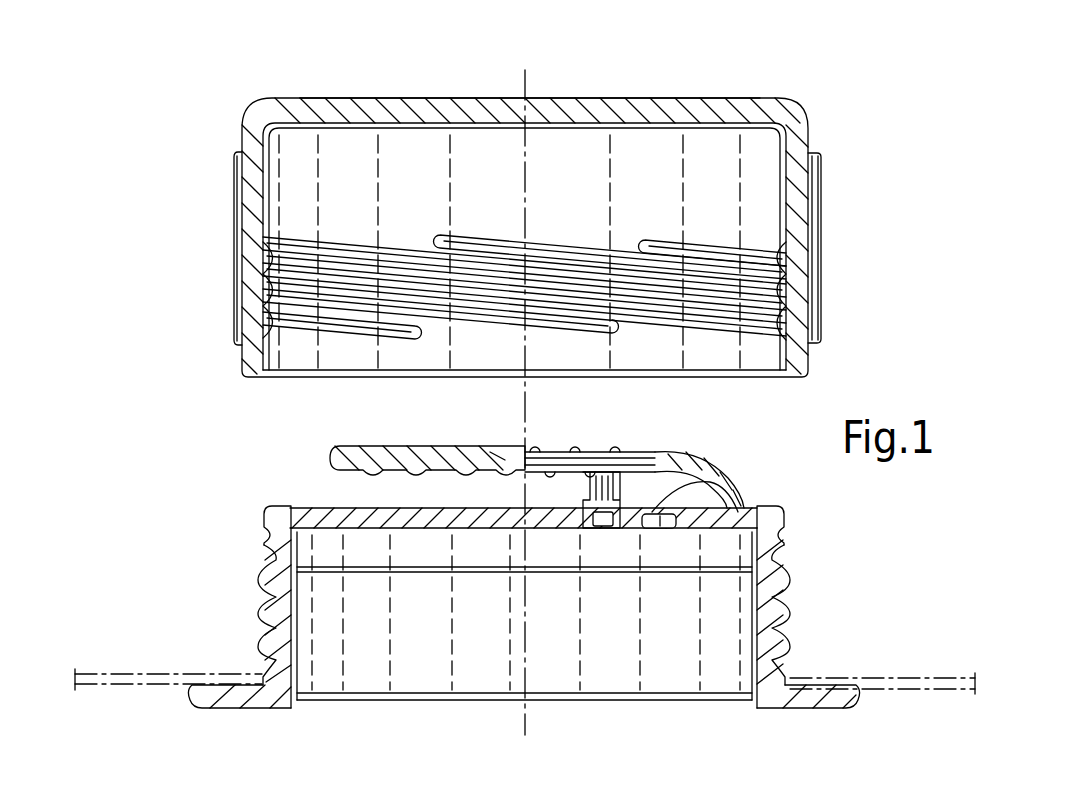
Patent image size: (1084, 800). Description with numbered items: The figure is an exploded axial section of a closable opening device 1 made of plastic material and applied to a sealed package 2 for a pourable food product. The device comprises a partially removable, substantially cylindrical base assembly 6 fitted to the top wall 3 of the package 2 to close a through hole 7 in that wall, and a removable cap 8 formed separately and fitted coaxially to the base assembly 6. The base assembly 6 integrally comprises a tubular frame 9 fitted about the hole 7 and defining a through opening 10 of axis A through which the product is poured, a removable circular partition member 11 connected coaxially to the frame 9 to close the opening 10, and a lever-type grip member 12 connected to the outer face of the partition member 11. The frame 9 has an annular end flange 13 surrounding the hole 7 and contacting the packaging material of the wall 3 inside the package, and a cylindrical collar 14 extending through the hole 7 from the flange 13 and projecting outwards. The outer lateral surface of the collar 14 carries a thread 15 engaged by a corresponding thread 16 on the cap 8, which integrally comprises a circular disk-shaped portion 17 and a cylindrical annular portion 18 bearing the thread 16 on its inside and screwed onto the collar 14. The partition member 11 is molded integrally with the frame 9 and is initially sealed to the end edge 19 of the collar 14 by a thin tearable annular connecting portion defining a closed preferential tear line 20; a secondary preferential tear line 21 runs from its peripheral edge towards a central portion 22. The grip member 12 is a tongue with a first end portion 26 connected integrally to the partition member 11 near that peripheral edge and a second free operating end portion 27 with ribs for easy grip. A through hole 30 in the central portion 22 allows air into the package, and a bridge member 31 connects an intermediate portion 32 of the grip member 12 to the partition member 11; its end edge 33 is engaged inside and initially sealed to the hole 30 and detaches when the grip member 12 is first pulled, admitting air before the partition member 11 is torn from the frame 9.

The opening device 1 is at (496, 204).
The sealed package 2 is at (150, 682).
The top wall 3 is at (855, 682).
The base assembly 6 is at (818, 635).
The through hole 7 is at (239, 639).
The cap 8 is at (771, 94).
The tubular frame 9 is at (266, 722).
The through opening 10 is at (753, 645).
The partition member 11 is at (345, 508).
The grip member 12 is at (665, 454).
The end flange 13 is at (800, 708).
The collar 14 is at (270, 610).
The thread 15 is at (790, 634).
The thread 16 is at (265, 300).
The disk-shaped portion 17 is at (595, 112).
The annular portion 18 is at (812, 216).
The end edge 19 is at (283, 532).
The preferential tear line 20 is at (786, 564).
The secondary preferential tear line 21 is at (705, 484).
The central portion 22 is at (448, 466).
The first end portion 26 is at (748, 500).
The free operating end portion 27 is at (352, 448).
The through hole 30 is at (614, 530).
The bridge member 31 is at (606, 472).
The intermediate portion 32 is at (498, 456).
The end edge 33 is at (578, 480).